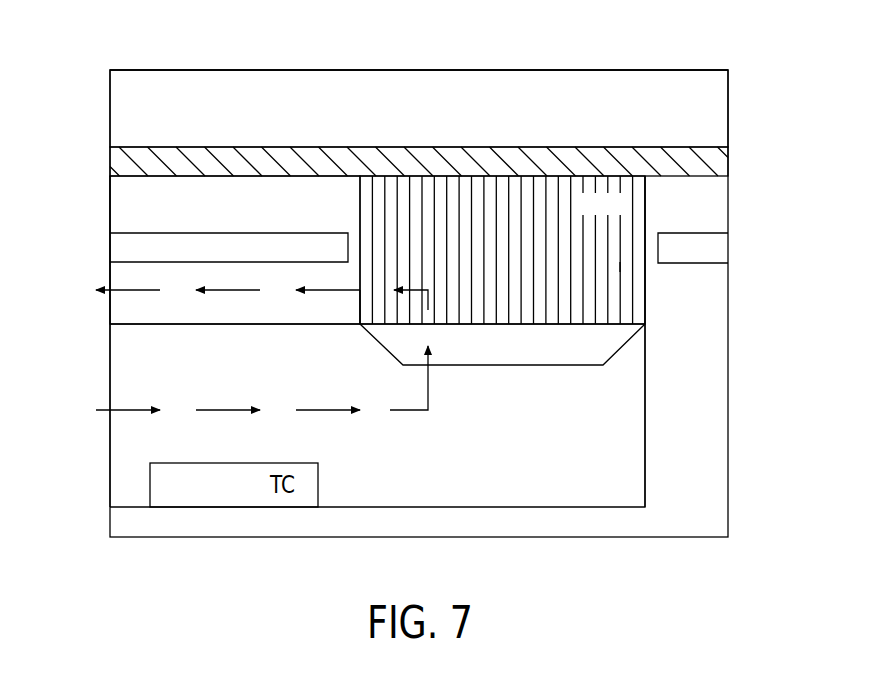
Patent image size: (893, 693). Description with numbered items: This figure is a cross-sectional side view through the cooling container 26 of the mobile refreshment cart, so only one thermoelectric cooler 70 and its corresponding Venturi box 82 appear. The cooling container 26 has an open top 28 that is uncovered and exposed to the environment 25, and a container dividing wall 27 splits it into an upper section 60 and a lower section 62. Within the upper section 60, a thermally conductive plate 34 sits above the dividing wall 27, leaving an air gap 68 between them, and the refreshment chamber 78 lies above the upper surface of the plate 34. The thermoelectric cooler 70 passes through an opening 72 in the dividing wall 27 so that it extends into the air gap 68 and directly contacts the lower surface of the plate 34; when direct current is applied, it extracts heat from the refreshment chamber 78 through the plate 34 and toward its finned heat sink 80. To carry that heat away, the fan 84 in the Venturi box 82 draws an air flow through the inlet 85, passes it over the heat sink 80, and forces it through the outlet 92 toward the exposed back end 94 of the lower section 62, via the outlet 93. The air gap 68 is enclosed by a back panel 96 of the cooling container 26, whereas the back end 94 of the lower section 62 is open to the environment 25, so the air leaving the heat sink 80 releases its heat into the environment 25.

The environment 25 is at (44, 368).
The cooling container 26 is at (728, 104).
The container dividing wall 27 is at (208, 243).
The top 28 is at (420, 70).
The thermally conductive plate 34 is at (314, 154).
The upper section 60 is at (95, 70).
The lower section 62 is at (95, 247).
The air gap 68 is at (185, 197).
The thermoelectric cooler 70 is at (632, 224).
The opening 72 is at (352, 230).
The refreshment chamber 78 is at (578, 88).
The heat sink 80 is at (620, 268).
The Venturi box 82 is at (645, 440).
The fan 84 is at (505, 365).
The inlet 85 is at (108, 440).
The outlet 92 is at (360, 300).
The outlet 93 is at (108, 304).
The back end 94 is at (110, 465).
The back panel 96 is at (112, 200).